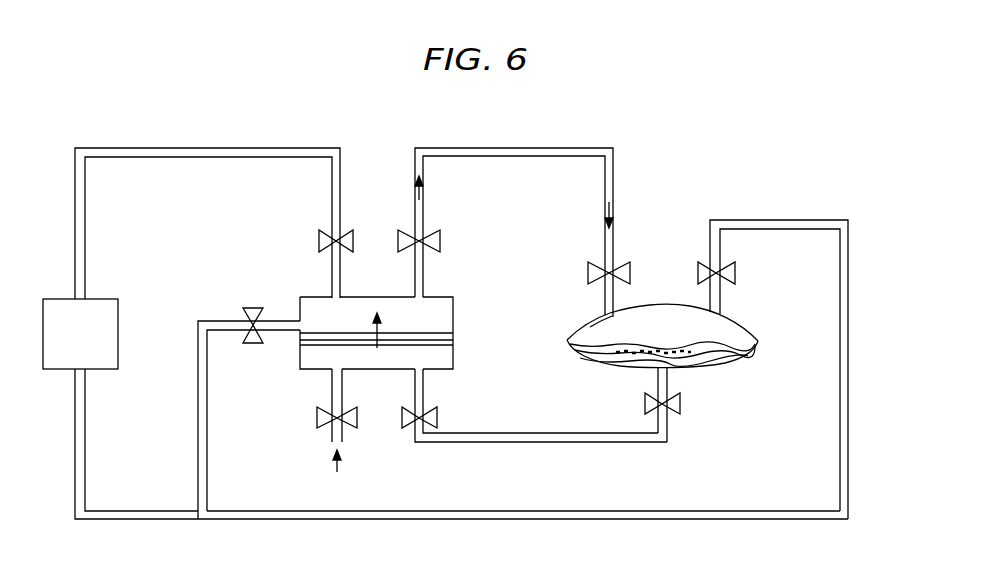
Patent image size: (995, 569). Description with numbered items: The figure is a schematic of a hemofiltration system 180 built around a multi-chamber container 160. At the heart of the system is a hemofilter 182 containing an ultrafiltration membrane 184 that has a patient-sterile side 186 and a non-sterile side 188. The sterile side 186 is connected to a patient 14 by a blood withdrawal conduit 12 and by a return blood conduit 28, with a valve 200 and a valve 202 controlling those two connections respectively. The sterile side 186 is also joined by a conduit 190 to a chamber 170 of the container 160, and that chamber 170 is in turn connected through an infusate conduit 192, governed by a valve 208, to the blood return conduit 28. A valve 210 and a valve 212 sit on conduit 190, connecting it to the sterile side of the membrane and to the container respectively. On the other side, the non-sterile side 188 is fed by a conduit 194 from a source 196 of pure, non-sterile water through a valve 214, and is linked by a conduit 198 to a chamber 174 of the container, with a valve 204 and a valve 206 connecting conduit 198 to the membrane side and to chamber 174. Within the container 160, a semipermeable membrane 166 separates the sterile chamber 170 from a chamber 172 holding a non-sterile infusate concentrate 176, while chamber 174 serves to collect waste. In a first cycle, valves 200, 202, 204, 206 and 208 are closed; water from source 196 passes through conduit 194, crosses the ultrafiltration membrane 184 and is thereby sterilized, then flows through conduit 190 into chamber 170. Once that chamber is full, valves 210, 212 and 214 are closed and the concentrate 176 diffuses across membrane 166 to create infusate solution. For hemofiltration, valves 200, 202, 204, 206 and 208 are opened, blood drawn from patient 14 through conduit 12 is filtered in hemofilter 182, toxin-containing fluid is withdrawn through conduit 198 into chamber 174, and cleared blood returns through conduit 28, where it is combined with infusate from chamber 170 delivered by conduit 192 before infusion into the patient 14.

The hemofiltration system 180 is at (139, 127).
The blood withdrawal conduit 12 is at (197, 148).
The patient 14 is at (91, 346).
The return blood conduit 28 is at (163, 510).
The valve 202 is at (253, 344).
The hemofilter 182 is at (486, 302).
The patient-sterile side 186 is at (442, 333).
The ultrafiltration membrane 184 is at (453, 340).
The non-sterile side 188 is at (453, 346).
The valve 200 is at (319, 241).
The conduit 190 is at (516, 148).
The valve 210 is at (440, 241).
The valve 212 is at (630, 273).
The infusate conduit 192 is at (848, 268).
The valve 208 is at (735, 273).
The container 160 is at (568, 353).
The chamber 170 is at (587, 326).
The semipermeable membrane 166 is at (735, 343).
The chamber 172 is at (760, 341).
The chamber 174 is at (738, 365).
The infusate concentrate 176 is at (619, 358).
The conduit 194 is at (342, 400).
The valve 214 is at (317, 418).
The source of pure, non-sterile water 196 is at (338, 476).
The conduit 198 is at (538, 433).
The valve 204 is at (437, 418).
The valve 206 is at (680, 404).